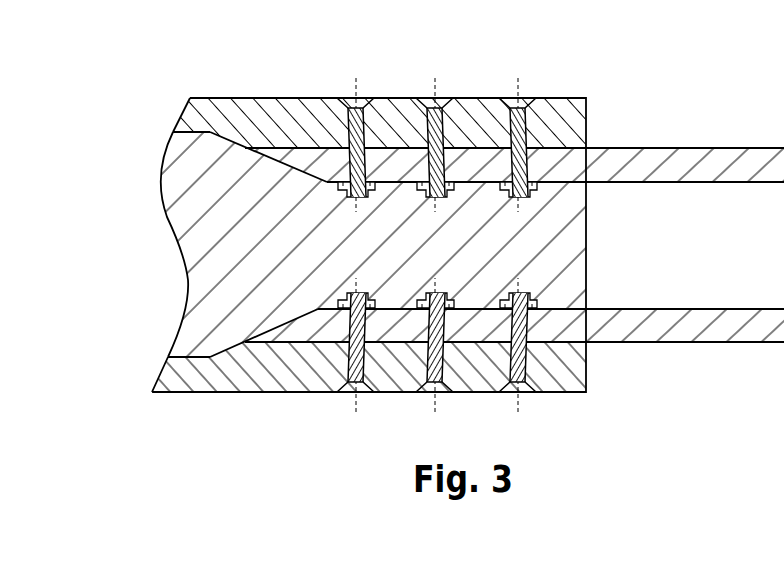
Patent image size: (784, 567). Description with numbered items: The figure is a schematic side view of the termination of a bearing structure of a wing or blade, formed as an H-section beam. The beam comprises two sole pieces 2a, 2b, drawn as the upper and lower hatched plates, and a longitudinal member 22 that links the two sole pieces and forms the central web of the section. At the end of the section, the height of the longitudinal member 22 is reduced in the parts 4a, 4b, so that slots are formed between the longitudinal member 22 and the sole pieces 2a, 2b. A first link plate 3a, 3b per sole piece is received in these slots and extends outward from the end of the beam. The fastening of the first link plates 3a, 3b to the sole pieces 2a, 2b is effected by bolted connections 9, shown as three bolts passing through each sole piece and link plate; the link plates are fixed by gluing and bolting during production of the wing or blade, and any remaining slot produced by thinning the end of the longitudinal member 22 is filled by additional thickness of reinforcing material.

The sole piece 2a is at (267, 130).
The sole piece 2b is at (252, 366).
The longitudinal member 22 is at (202, 253).
The first link plate 3a is at (731, 148).
The first link plate 3b is at (704, 335).
The part receiving the first link plate 4a is at (263, 167).
The part receiving the first link plate 4b is at (283, 306).
The bolted connection 9 is at (525, 96).